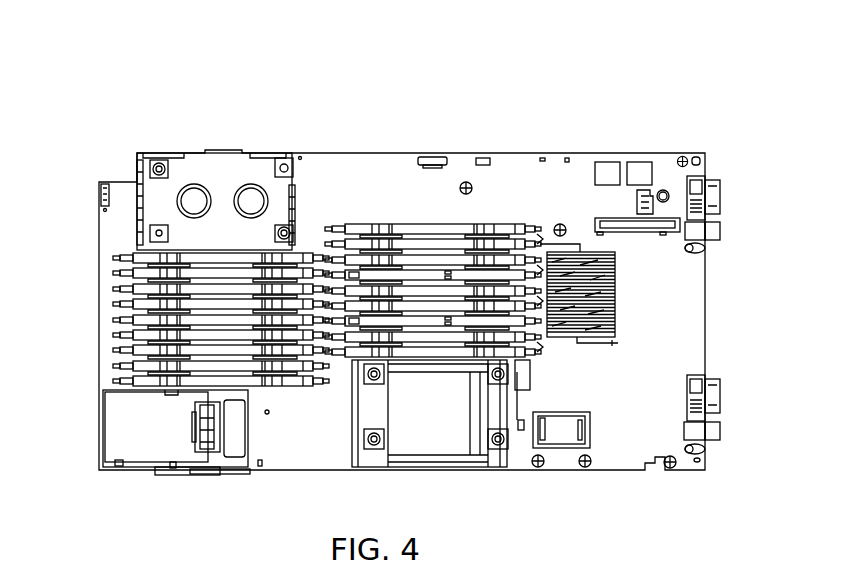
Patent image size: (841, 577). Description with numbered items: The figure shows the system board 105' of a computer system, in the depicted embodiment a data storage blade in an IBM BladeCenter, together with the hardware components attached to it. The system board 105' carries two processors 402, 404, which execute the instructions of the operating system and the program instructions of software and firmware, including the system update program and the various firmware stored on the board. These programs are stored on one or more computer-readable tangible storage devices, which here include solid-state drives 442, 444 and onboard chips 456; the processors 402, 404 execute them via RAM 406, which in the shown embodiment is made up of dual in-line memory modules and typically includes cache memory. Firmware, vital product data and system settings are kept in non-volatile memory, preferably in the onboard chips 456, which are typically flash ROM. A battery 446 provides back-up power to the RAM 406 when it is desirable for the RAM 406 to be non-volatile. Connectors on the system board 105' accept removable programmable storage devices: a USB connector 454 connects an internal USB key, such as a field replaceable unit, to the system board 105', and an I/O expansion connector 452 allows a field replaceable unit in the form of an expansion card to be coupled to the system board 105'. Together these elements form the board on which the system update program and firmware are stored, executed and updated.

The system board 105' is at (409, 282).
The processor 402 is at (437, 437).
The processor 404 is at (218, 163).
The RAM 406 is at (112, 255).
The computer-readable tangible storage device 442 is at (207, 408).
The computer-readable tangible storage device 444 is at (207, 428).
The battery 446 is at (430, 157).
The I/O expansion connector 452 is at (596, 230).
The USB connector 454 is at (664, 188).
The onboard chips 456 is at (637, 162).